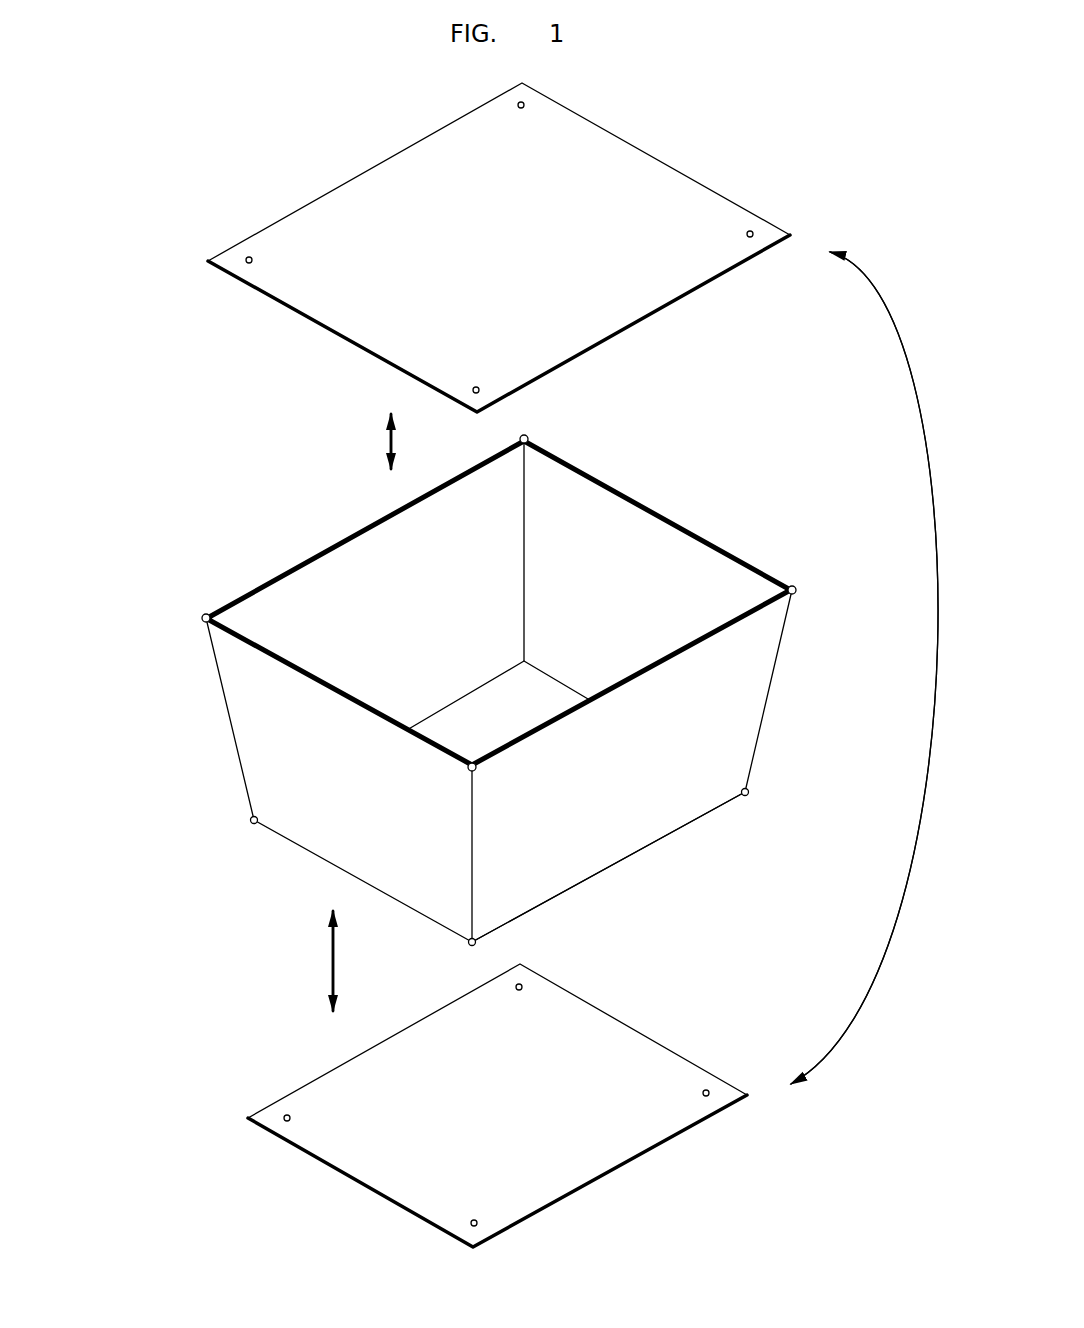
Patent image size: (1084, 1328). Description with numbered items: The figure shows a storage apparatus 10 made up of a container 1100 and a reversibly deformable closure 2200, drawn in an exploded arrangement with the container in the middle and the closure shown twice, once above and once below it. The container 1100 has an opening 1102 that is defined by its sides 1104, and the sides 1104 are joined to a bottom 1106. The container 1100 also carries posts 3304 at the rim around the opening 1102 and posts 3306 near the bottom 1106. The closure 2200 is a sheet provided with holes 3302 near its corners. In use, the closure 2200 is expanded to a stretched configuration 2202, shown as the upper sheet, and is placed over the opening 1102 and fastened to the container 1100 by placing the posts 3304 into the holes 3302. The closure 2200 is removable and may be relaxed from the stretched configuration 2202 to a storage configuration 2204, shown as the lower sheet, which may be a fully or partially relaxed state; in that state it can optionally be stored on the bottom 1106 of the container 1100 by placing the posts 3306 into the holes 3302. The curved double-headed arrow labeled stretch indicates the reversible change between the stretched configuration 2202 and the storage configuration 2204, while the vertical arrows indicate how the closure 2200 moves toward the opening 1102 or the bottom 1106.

The storage apparatus 10 is at (164, 356).
The container 1100 is at (218, 673).
The opening 1102 is at (375, 568).
The sides 1104 is at (416, 654).
The bottom 1106 is at (607, 863).
The reversibly deformable closure 2200 is at (498, 659).
The stretched configuration 2202 is at (462, 278).
The storage configuration 2204 is at (573, 1197).
The holes 3302 is at (249, 260).
The posts 3304 is at (528, 436).
The posts 3306 is at (254, 823).